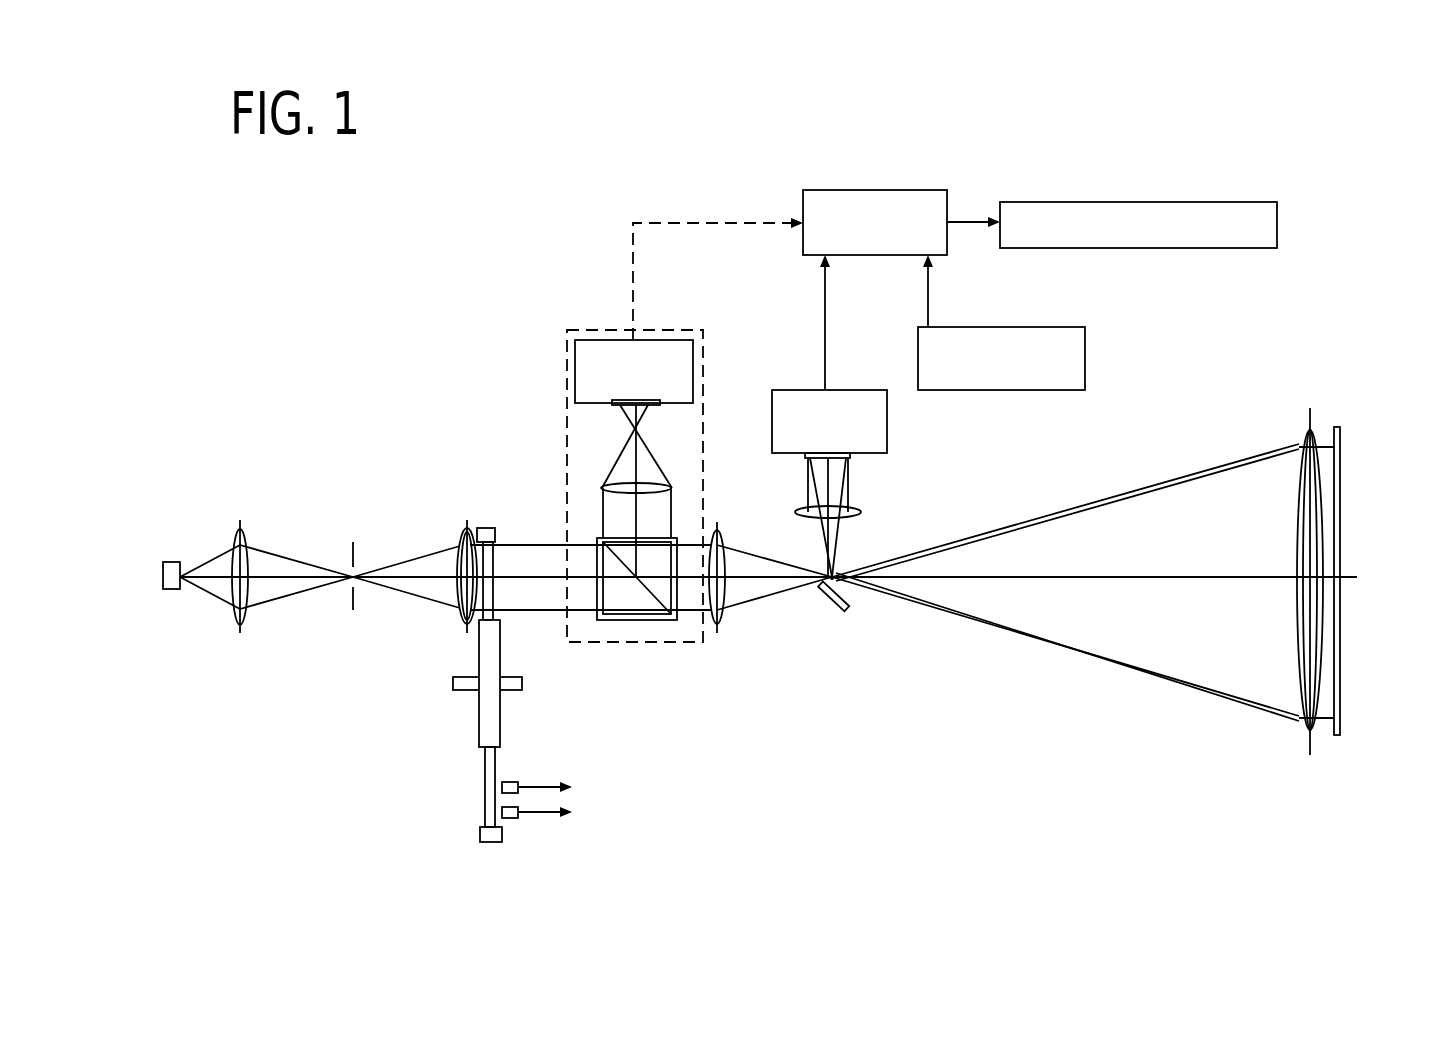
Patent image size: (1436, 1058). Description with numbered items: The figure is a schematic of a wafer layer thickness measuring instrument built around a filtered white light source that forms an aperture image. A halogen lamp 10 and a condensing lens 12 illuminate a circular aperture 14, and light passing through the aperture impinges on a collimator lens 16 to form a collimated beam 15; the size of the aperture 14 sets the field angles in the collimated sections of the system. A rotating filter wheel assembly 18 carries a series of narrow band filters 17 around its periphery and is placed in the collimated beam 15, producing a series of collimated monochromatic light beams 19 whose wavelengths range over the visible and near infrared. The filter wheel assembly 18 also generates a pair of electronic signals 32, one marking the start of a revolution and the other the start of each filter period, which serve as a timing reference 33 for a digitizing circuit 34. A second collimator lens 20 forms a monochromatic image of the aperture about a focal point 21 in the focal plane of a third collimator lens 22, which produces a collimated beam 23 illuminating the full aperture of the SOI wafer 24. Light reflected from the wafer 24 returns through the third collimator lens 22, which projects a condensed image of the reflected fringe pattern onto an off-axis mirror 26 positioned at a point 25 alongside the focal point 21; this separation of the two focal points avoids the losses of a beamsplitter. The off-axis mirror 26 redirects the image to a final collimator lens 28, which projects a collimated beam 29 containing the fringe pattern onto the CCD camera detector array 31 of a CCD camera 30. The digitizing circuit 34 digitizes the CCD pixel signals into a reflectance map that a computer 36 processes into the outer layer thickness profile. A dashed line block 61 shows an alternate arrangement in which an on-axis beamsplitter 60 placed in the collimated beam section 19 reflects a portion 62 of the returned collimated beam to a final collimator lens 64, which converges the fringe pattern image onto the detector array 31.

The halogen lamp 10 is at (166, 590).
The condensing lens 12 is at (236, 532).
The circular aperture 14 is at (350, 548).
The collimated beam 15 is at (463, 612).
The collimator lens 16 is at (462, 542).
The narrow band filters 17 is at (497, 598).
The filter wheel assembly 18 is at (483, 725).
The collimated monochromatic light beams 19 is at (527, 545).
The second collimator lens 20 is at (722, 610).
The focal point 21 is at (838, 573).
The third collimator lens 22 is at (1303, 718).
The collimated beam 23 is at (1318, 440).
The SOI wafer 24 is at (1340, 520).
The focal point 25 is at (841, 597).
The off-axis mirror 26 is at (831, 595).
The final collimator lens 28 is at (808, 512).
The collimated beam 29 is at (850, 485).
The CCD camera 30 is at (575, 355).
The CCD camera detector array 31 is at (616, 406).
The electronic signals 32 is at (533, 800).
The timing reference 33 is at (1046, 327).
The digitizing circuit 34 is at (903, 190).
The computer 36 is at (1215, 202).
The beamsplitter 60 is at (627, 598).
The dashed line block 61 is at (668, 328).
The reflected beam portion 62 is at (613, 518).
The final collimator lens 64 is at (668, 487).